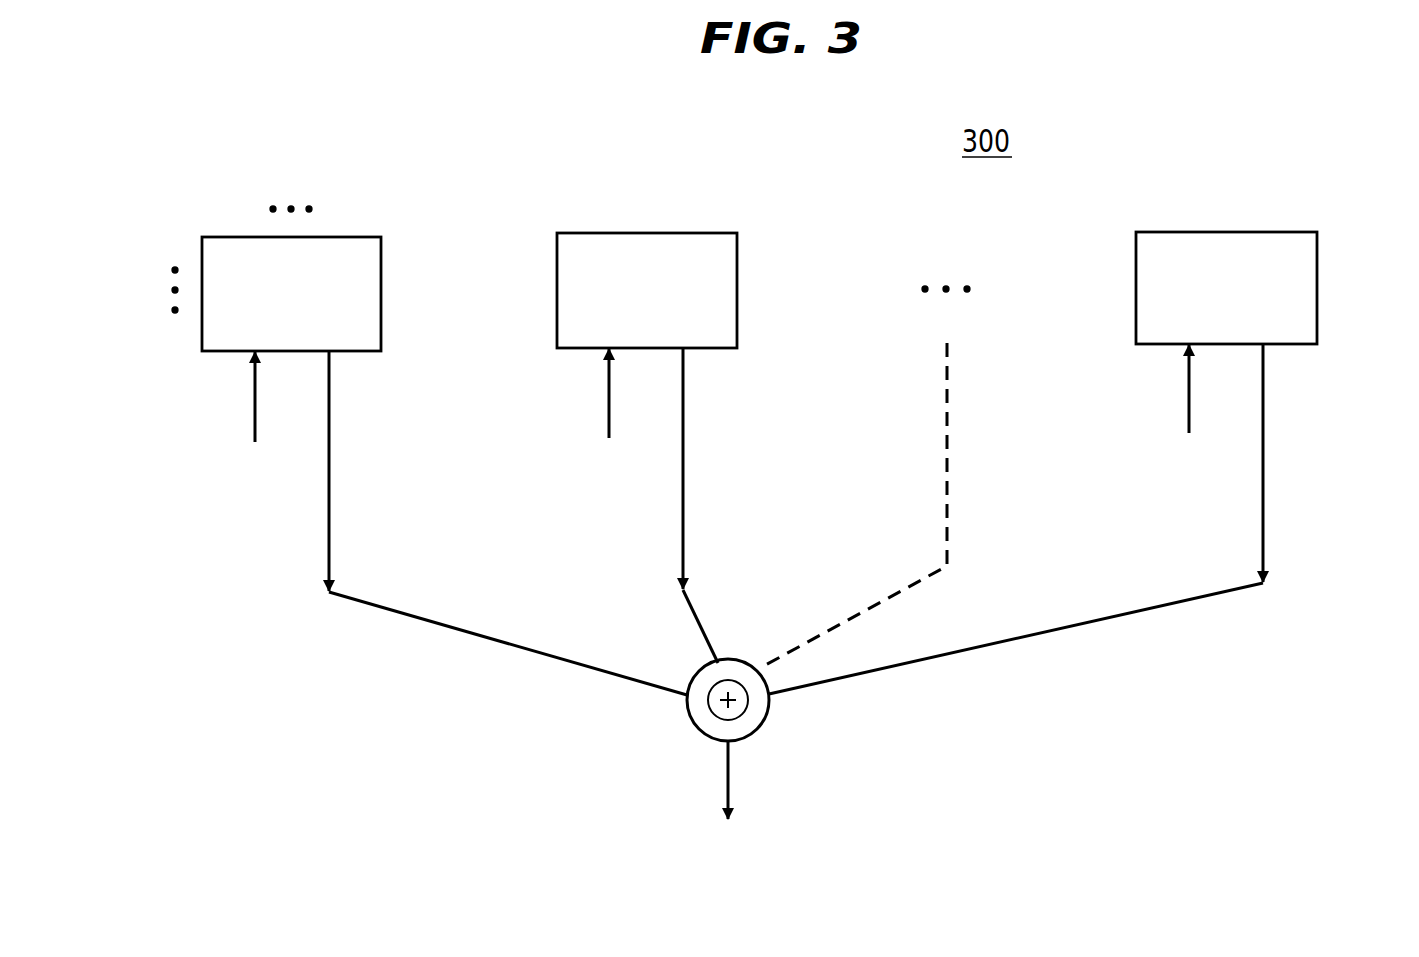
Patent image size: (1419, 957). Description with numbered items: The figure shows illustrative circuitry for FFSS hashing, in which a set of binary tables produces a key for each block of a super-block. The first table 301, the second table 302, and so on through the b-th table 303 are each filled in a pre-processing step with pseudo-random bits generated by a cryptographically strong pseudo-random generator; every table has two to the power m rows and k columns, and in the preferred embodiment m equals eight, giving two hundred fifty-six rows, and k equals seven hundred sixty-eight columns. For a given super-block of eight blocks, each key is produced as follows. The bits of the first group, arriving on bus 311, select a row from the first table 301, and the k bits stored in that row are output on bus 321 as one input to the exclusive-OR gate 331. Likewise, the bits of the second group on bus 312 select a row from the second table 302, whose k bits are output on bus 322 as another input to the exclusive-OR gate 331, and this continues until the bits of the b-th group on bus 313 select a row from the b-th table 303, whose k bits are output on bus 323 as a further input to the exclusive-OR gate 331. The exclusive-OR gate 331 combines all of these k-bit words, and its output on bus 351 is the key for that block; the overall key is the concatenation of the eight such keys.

The first table 301 is at (381, 277).
The second table 302 is at (737, 283).
The b-th table 303 is at (1317, 280).
The bus 311 is at (253, 416).
The bus 312 is at (607, 409).
The bus 313 is at (1187, 400).
The bus 321 is at (331, 420).
The bus 322 is at (685, 402).
The bus 323 is at (1265, 430).
The exclusive-OR gate 331 is at (687, 712).
The bus 351 is at (732, 755).